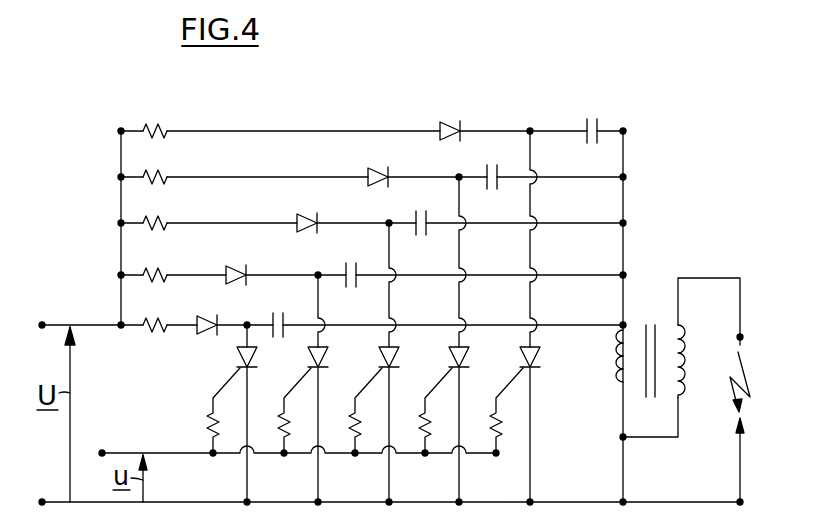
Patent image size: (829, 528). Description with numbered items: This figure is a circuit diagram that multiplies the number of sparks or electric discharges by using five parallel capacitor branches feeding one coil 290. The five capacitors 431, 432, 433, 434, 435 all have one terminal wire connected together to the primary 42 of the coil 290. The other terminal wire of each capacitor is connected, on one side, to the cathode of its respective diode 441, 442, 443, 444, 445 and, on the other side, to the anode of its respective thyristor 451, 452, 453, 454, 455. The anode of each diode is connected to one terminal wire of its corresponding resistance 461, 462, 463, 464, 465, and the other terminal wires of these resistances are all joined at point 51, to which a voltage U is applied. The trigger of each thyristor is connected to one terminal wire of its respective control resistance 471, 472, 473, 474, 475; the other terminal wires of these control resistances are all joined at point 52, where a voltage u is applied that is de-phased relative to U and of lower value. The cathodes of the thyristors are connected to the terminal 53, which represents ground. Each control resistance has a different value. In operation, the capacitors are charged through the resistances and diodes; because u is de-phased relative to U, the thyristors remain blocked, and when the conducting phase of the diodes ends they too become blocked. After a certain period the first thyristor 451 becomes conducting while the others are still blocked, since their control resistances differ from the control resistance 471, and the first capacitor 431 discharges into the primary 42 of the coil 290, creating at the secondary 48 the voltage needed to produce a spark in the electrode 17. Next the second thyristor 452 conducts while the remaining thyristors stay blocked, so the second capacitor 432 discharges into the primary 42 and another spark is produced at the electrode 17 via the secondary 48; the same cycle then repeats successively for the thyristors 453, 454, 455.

The resistance 461 is at (157, 125).
The resistance 462 is at (149, 171).
The resistance 463 is at (149, 217).
The resistance 464 is at (149, 268).
The resistance 465 is at (149, 318).
The diode 441 is at (446, 121).
The diode 442 is at (385, 169).
The diode 443 is at (312, 215).
The diode 444 is at (242, 266).
The diode 445 is at (214, 316).
The capacitor 431 is at (599, 118).
The capacitor 432 is at (497, 167).
The capacitor 433 is at (426, 213).
The capacitor 434 is at (356, 263).
The capacitor 435 is at (287, 307).
The thyristor 451 is at (521, 357).
The thyristor 452 is at (450, 357).
The thyristor 453 is at (380, 357).
The thyristor 454 is at (309, 357).
The thyristor 455 is at (238, 357).
The control resistance 471 is at (494, 430).
The control resistance 472 is at (423, 430).
The control resistance 473 is at (353, 430).
The control resistance 474 is at (282, 430).
The control resistance 475 is at (210, 430).
The point 51 is at (42, 322).
The point 52 is at (102, 451).
The terminal 53 is at (42, 499).
The primary 42 is at (619, 363).
The secondary 48 is at (694, 376).
The coil 290 is at (654, 306).
The electrode 17 is at (745, 345).